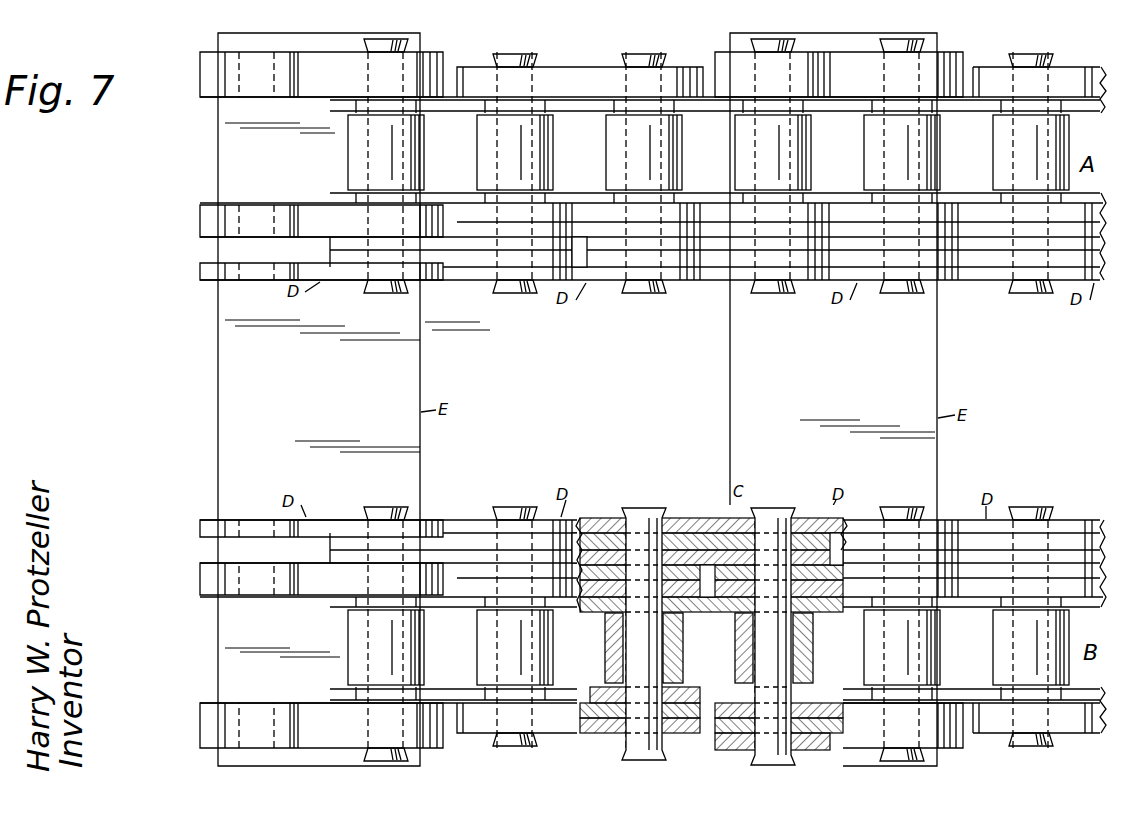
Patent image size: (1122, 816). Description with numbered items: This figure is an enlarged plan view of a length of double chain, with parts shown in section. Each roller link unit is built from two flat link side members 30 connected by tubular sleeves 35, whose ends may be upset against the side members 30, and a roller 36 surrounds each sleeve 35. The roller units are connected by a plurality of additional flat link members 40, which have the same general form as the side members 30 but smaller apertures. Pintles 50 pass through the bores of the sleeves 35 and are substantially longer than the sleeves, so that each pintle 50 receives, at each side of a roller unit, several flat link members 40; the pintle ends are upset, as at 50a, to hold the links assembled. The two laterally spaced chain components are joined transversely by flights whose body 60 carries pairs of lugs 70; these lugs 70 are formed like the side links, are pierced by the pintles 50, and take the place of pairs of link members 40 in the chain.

The link side member 30 is at (702, 687).
The tubular sleeve 35 is at (858, 633).
The roller 36 is at (1000, 657).
The flat link member 40 is at (607, 722).
The pintle 50 is at (645, 724).
The upset end of pintle 50a is at (523, 748).
The flight body 60 is at (420, 359).
The lug 70 is at (200, 721).